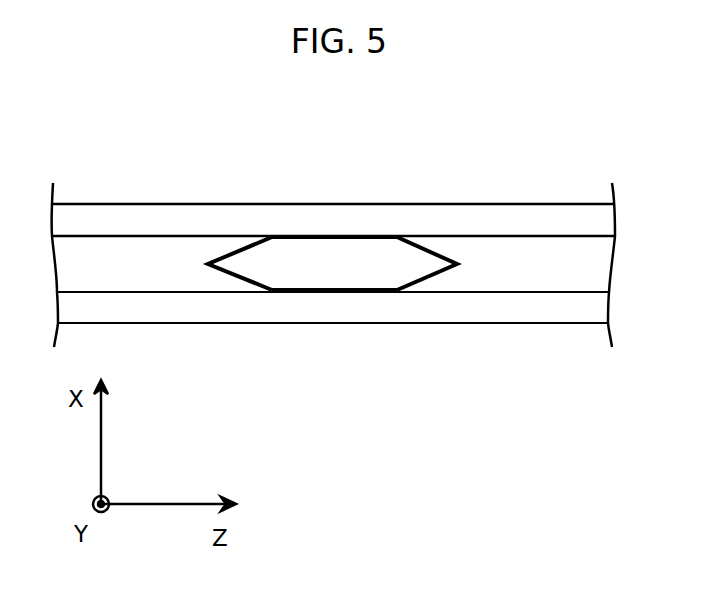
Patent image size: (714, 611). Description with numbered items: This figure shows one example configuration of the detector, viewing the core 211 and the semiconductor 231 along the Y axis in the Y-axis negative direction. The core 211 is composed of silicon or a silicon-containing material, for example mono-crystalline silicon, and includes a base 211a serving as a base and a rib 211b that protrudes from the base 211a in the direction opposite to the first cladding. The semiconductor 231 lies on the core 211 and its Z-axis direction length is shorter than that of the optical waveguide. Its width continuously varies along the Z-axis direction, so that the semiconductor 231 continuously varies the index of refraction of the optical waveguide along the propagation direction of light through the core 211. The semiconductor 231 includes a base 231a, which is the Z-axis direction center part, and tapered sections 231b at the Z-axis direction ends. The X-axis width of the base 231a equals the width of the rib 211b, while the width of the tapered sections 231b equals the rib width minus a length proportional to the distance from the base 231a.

The core 211 is at (333, 262).
The base 211a is at (500, 223).
The rib 211b is at (566, 263).
The semiconductor 231 is at (332, 275).
The base 231a is at (332, 278).
The tapered sections 231b is at (240, 267).